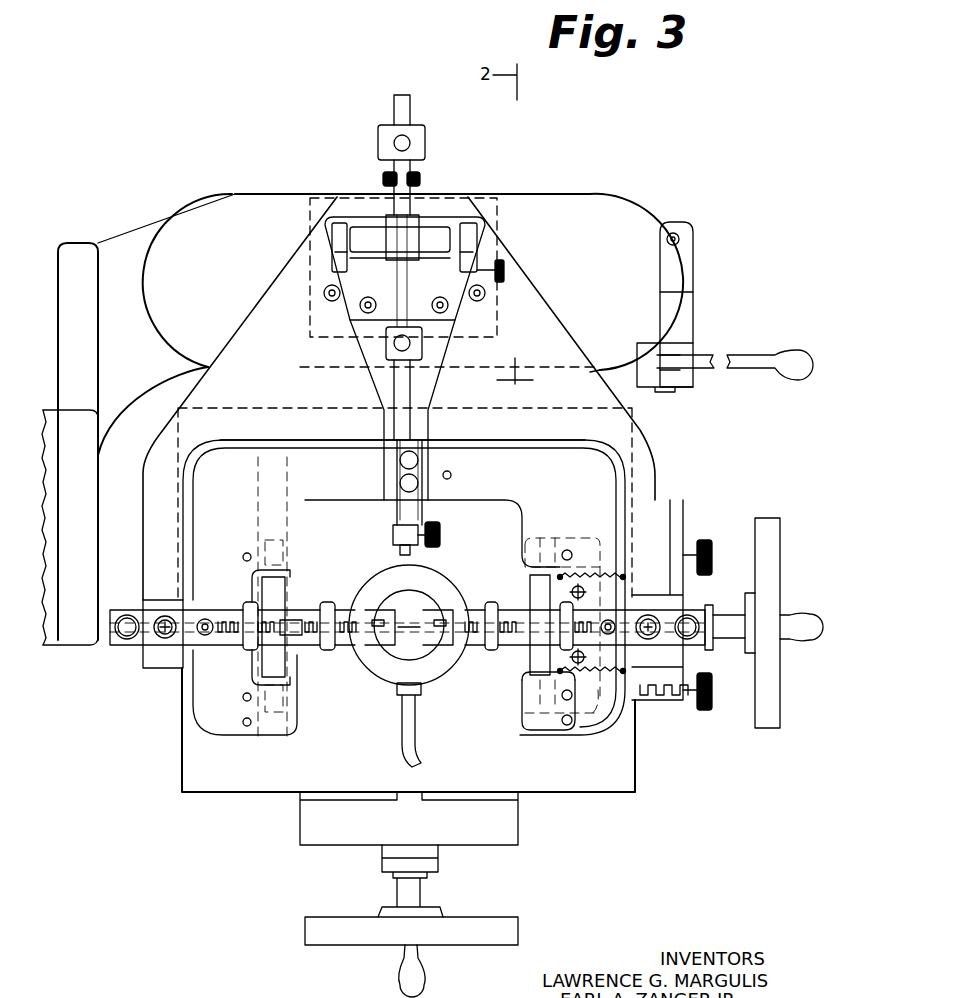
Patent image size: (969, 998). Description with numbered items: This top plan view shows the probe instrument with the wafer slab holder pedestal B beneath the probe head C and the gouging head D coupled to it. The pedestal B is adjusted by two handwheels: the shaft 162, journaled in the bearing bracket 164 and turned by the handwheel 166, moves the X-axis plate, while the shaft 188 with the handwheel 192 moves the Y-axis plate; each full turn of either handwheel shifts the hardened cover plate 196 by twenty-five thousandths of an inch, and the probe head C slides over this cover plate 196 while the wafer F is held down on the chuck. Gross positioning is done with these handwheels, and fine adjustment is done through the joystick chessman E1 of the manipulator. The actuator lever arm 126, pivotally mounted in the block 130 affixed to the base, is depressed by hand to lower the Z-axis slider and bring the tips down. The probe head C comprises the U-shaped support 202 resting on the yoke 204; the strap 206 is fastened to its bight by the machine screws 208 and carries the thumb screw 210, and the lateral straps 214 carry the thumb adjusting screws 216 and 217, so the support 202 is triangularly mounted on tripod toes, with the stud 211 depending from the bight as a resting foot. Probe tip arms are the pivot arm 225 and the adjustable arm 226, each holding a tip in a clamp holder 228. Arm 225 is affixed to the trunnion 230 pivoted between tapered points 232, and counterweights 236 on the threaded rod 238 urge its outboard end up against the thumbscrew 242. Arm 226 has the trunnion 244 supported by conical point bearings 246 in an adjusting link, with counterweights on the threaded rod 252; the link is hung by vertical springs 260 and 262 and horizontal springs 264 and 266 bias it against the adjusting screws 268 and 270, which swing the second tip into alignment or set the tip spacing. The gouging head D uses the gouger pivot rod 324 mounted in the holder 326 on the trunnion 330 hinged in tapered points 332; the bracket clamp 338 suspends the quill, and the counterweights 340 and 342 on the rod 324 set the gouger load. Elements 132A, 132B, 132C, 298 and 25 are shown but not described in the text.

The clamp member lower plate portion 132A is at (87, 427).
The clamp member upright bar portion 132B is at (90, 245).
The clamp member lobe portion 132C is at (632, 212).
The block 130 is at (686, 253).
The joystick chessman E1 is at (675, 332).
The actuator lever arm 126 is at (760, 368).
The gouger pivot rod 324 is at (397, 100).
The counterweight 342 is at (417, 143).
The holder 326 is at (388, 222).
The trunnion 330 is at (430, 230).
The tapered points 332 is at (333, 245).
The thumb screw 298 is at (504, 270).
The counterweight 340 is at (388, 348).
The gouging head D is at (426, 392).
The thumb screw 210 is at (450, 440).
The stud 211 is at (450, 473).
The machine screws 208 is at (400, 483).
The strap 206 is at (420, 495).
The yoke 204 is at (578, 436).
The bracket clamp 338 is at (393, 532).
The U-shaped support 202 is at (530, 510).
The horizontal spring 264 is at (568, 538).
The adjusting screw 268 is at (705, 540).
The thumb adjusting screw 216 is at (163, 616).
The thumbscrew 242 is at (127, 615).
The counterweights 236 is at (250, 605).
The tapered points 232 is at (288, 575).
The wafer F is at (423, 604).
The vertical spring 260 is at (532, 585).
The threaded rod 252 is at (490, 578).
The thumb adjusting screw 217 is at (650, 616).
The bearing 25 is at (690, 618).
The shaft 188 is at (735, 628).
The lateral straps 214 is at (122, 641).
The trunnion 230 is at (270, 660).
The pivot arm 225 is at (315, 645).
The threaded rod 238 is at (352, 640).
The clamp holders 228 is at (400, 655).
The adjustable arm 226 is at (492, 645).
The trunnion 244 is at (535, 674).
The conical point bearings 246 is at (525, 700).
The vertical spring 262 is at (580, 705).
The horizontal spring 266 is at (593, 703).
The adjusting screw 270 is at (705, 712).
The handwheel 192 is at (768, 728).
The wafer slab holder pedestal B is at (182, 767).
The probe head C is at (266, 738).
The cover plate 196 is at (221, 784).
The bearing bracket 164 is at (502, 828).
The shaft 162 is at (420, 896).
The handwheel 166 is at (518, 935).